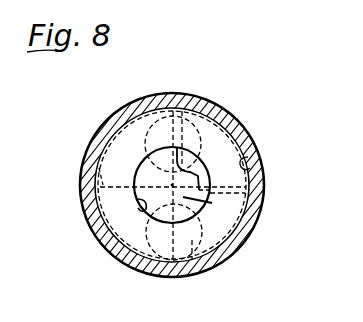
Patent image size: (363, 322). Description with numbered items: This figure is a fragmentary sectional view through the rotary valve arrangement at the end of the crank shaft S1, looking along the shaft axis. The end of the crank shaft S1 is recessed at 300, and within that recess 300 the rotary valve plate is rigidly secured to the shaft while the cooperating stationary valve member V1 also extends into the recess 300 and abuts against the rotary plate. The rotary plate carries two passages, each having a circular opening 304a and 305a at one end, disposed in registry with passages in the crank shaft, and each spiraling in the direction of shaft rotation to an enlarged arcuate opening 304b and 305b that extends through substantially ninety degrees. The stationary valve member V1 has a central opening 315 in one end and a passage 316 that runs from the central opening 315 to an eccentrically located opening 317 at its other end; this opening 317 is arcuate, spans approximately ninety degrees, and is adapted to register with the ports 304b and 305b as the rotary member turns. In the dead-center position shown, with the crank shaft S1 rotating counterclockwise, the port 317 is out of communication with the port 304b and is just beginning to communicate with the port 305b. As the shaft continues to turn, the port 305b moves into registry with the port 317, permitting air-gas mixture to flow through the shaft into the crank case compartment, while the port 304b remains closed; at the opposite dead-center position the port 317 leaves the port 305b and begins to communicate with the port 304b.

The recess 300 is at (250, 168).
The circular opening 304a is at (191, 99).
The enlarged arcuate opening 304b is at (83, 169).
The circular opening 305a is at (201, 275).
The enlarged arcuate opening 305b is at (262, 203).
The central opening 315 is at (147, 205).
The passage 316 is at (209, 207).
The eccentrically located opening 317 is at (195, 172).
The stationary valve member V1 is at (218, 133).
The crank shaft S1 is at (249, 132).